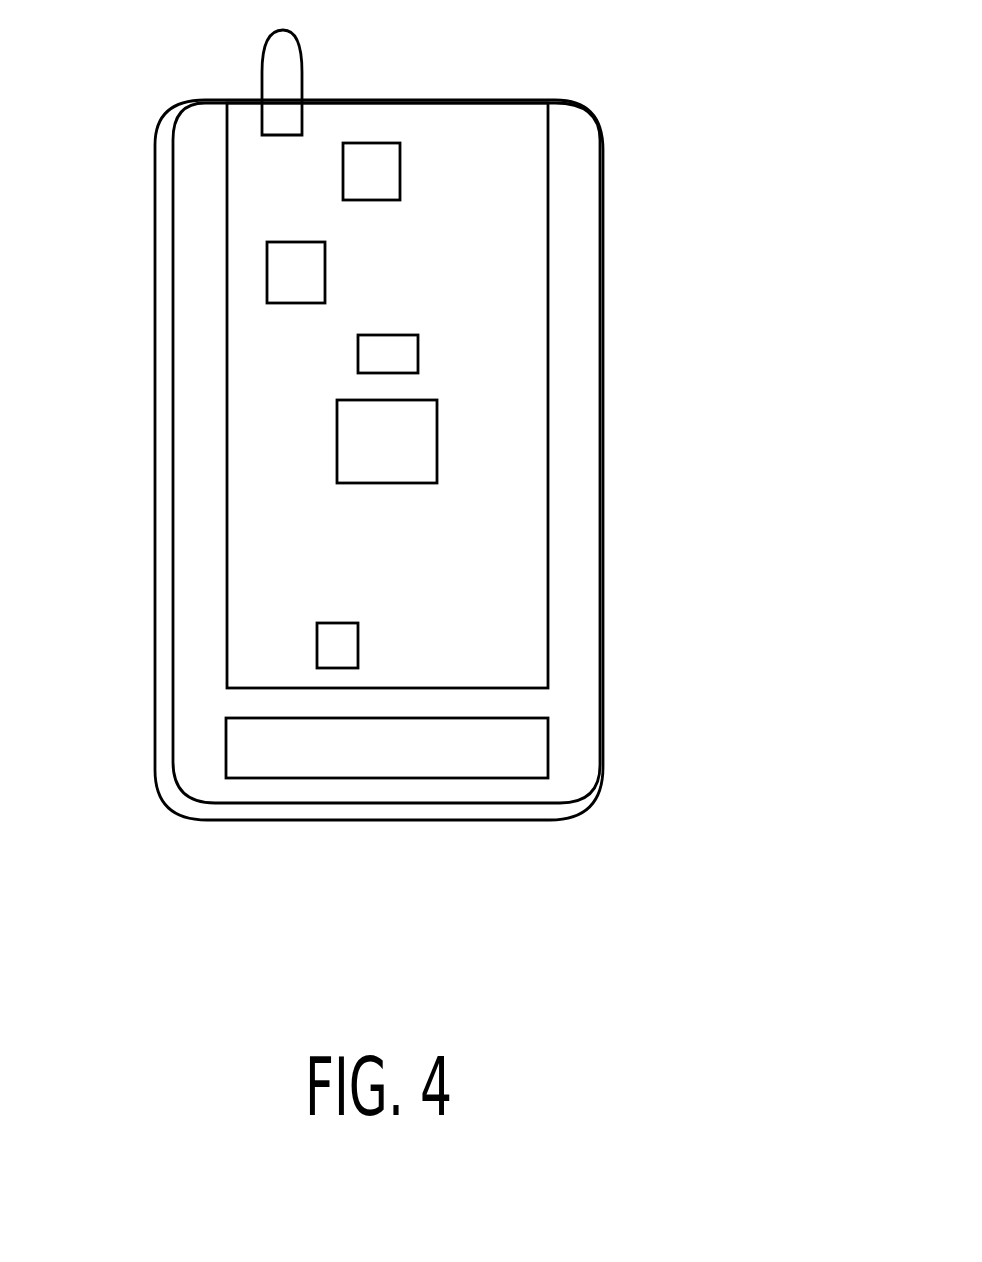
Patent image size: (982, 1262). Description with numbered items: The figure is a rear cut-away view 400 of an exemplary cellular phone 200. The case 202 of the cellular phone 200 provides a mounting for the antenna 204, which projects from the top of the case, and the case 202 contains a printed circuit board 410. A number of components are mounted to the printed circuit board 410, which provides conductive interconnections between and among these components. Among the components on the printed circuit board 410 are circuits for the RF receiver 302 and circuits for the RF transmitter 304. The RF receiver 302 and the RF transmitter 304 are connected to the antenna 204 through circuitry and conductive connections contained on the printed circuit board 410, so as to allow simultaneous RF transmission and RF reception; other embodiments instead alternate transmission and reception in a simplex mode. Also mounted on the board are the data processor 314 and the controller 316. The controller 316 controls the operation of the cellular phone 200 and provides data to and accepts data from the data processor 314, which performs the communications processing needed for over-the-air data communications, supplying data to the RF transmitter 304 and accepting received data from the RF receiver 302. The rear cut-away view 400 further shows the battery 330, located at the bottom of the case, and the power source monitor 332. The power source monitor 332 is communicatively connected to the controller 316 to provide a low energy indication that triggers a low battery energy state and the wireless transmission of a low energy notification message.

The cellular phone 200 is at (455, 470).
The case 202 is at (153, 728).
The antenna 204 is at (263, 65).
The RF receiver 302 is at (267, 275).
The RF transmitter 304 is at (368, 143).
The data processor 314 is at (418, 355).
The controller 316 is at (437, 440).
The battery 330 is at (495, 778).
The power source monitor 332 is at (338, 622).
The rear cut-away view 400 is at (324, 963).
The printed circuit board 410 is at (508, 630).